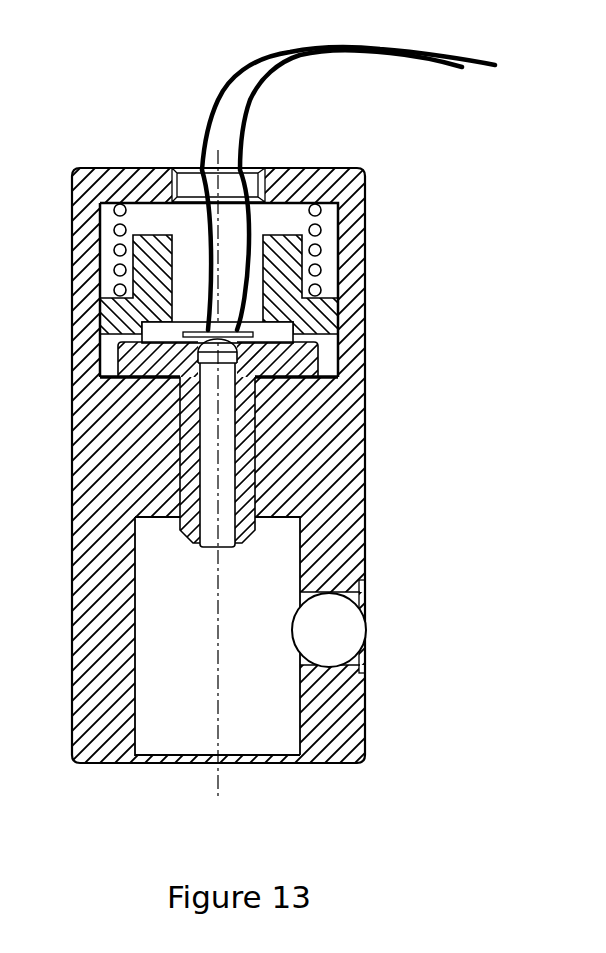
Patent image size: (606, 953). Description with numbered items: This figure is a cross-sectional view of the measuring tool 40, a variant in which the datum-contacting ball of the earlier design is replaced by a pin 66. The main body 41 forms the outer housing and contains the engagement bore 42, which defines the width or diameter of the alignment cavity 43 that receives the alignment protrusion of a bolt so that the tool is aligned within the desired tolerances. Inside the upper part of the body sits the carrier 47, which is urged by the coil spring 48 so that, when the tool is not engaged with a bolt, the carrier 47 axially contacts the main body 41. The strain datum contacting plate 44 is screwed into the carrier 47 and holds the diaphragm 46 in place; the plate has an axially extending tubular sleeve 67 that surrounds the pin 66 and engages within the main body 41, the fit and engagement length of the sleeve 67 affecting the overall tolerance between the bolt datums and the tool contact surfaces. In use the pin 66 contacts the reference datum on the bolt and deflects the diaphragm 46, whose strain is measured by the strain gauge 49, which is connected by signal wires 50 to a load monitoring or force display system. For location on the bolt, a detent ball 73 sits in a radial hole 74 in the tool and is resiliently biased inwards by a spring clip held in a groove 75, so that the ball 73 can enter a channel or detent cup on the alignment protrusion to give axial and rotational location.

The measuring tool 40 is at (453, 229).
The main body 41 is at (360, 723).
The engagement bore 42 is at (135, 713).
The alignment cavity 43 is at (240, 730).
The strain datum contacting plate 44 is at (125, 383).
The diaphragm 46 is at (143, 335).
The carrier 47 is at (327, 313).
The coil spring 48 is at (320, 228).
The strain gauge 49 is at (173, 317).
The signal wires 50 is at (413, 45).
The pin 66 is at (225, 458).
The sleeve 67 is at (187, 458).
The detent ball 73 is at (350, 643).
The radial hole 74 is at (357, 580).
The groove 75 is at (363, 593).